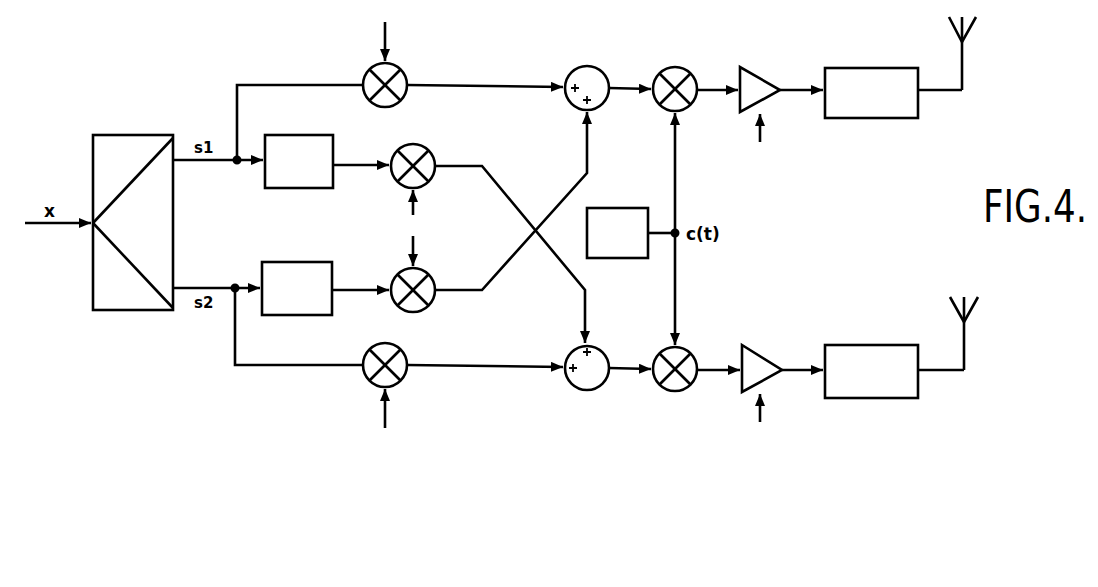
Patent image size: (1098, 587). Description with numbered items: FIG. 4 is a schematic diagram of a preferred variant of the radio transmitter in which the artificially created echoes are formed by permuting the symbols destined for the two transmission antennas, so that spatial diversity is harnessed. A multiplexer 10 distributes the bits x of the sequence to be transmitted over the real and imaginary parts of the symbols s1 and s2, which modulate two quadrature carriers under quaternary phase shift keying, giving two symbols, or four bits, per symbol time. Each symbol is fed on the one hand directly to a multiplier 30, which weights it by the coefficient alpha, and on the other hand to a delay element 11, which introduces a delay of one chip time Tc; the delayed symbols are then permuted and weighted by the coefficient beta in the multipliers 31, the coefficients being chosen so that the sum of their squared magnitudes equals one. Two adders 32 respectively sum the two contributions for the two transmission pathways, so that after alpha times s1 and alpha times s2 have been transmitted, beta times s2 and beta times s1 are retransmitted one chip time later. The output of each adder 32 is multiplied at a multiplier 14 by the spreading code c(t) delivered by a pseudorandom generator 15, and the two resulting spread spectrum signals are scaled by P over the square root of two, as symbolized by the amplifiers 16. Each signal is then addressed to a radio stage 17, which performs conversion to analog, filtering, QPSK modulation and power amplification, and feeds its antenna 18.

The multiplexer 10 is at (112, 135).
The delay element 11 is at (290, 188).
The multiplier 14 is at (660, 72).
The pseudorandom generator 15 is at (622, 208).
The amplifier 16 is at (758, 72).
The radio stage 17 is at (861, 68).
The antenna 18 is at (962, 62).
The multiplier 30 is at (366, 72).
The multiplier 31 is at (398, 184).
The adder 32 is at (571, 71).